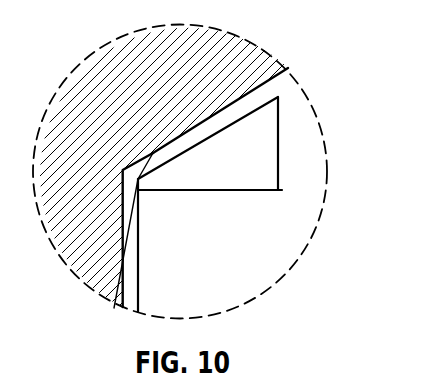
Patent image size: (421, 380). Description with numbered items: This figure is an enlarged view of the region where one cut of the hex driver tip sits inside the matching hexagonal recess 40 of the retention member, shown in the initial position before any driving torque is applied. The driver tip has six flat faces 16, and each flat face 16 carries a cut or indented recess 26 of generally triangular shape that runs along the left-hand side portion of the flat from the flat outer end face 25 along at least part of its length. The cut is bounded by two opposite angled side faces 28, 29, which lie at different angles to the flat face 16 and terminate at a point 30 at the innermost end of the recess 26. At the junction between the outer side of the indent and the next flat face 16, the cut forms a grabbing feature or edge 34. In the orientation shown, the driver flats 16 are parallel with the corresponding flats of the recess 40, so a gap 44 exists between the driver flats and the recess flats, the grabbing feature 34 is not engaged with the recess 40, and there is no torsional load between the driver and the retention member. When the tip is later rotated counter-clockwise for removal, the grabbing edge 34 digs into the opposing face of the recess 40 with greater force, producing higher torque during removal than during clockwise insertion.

The flat face 16 is at (304, 86).
The flat outer end face 25 is at (200, 298).
The cut or indented recess 26 is at (248, 174).
The angled side face 28 is at (248, 192).
The angled side face 29 is at (282, 136).
The point 30 is at (282, 190).
The grabbing feature or edge 34 is at (139, 192).
The hexagonal recess 40 is at (244, 112).
The gap 44 is at (207, 126).